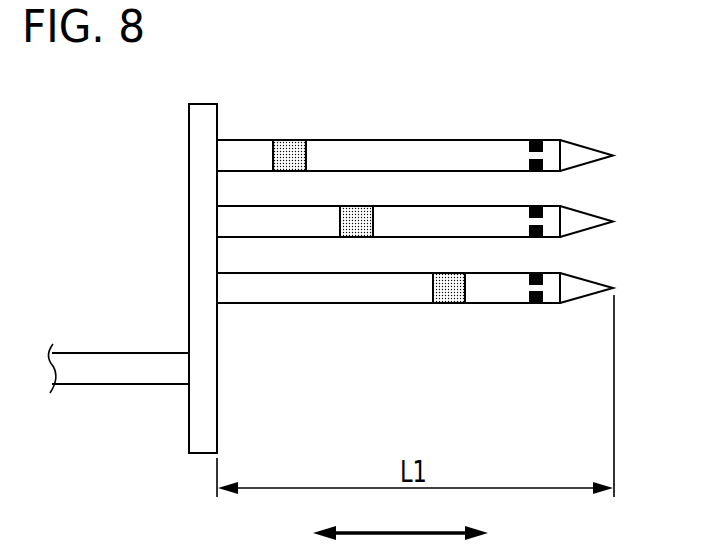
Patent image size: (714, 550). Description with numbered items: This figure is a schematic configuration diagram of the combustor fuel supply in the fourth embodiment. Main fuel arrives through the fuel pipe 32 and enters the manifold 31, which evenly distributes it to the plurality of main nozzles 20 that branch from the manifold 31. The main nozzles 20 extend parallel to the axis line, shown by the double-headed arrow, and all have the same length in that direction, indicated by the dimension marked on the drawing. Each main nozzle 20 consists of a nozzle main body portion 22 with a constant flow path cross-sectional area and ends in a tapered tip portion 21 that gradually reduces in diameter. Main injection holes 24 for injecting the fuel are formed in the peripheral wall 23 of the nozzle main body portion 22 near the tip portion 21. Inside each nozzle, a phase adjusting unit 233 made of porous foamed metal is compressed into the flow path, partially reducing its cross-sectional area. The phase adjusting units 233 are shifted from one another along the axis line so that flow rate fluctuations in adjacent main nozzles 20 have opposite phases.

The main nozzle 20 is at (388, 214).
The tip portion 21 is at (590, 141).
The nozzle main body portion 22 is at (366, 148).
The peripheral wall 23 is at (490, 152).
The main injection hole 24 is at (537, 140).
The phase adjusting unit 233 is at (290, 152).
The manifold 31 is at (203, 415).
The fuel pipe 32 is at (108, 366).